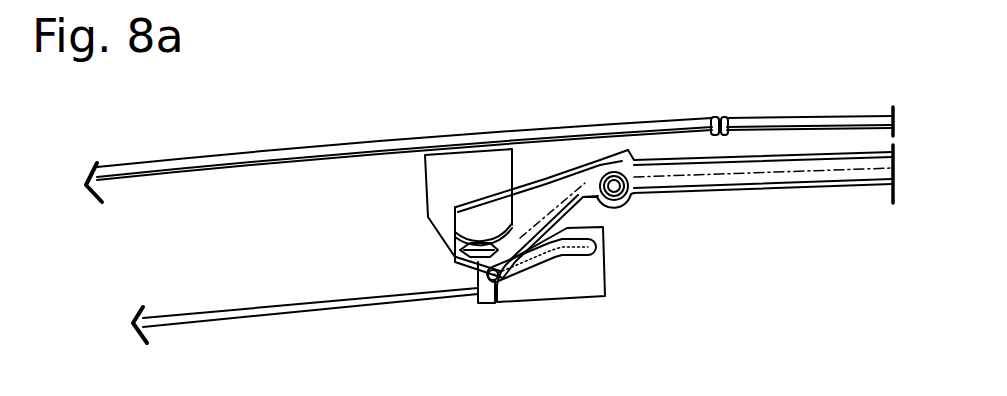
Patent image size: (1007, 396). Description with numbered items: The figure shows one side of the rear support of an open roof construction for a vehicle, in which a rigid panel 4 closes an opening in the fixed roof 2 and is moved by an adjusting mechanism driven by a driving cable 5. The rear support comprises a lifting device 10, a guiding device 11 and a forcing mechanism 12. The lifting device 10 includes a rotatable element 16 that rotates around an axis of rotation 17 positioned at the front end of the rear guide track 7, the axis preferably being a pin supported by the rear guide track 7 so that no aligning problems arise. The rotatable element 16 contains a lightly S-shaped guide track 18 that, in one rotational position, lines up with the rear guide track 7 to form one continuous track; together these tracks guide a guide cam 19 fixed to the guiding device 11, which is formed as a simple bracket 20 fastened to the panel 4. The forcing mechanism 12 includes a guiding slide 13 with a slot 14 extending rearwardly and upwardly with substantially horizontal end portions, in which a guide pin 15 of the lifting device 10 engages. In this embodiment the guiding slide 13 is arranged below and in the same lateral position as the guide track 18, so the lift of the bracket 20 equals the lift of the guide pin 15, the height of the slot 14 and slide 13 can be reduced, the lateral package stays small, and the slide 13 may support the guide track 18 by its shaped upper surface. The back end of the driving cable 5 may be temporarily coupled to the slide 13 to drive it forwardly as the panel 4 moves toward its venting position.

The fixed roof 2 is at (797, 122).
The panel 4 is at (235, 154).
The driving cable 5 is at (301, 306).
The rear guide track 7 is at (853, 172).
The lifting device 10 is at (533, 160).
The guiding device 11 is at (388, 196).
The forcing mechanism 12 is at (650, 251).
The guiding slide 13 is at (584, 272).
The slot 14 is at (546, 262).
The guide pin 15 is at (499, 285).
The rotatable element 16 is at (525, 200).
The axis of rotation 17 is at (624, 172).
The guide track 18 is at (586, 176).
The guide cam 19 is at (476, 262).
The bracket 20 is at (463, 176).